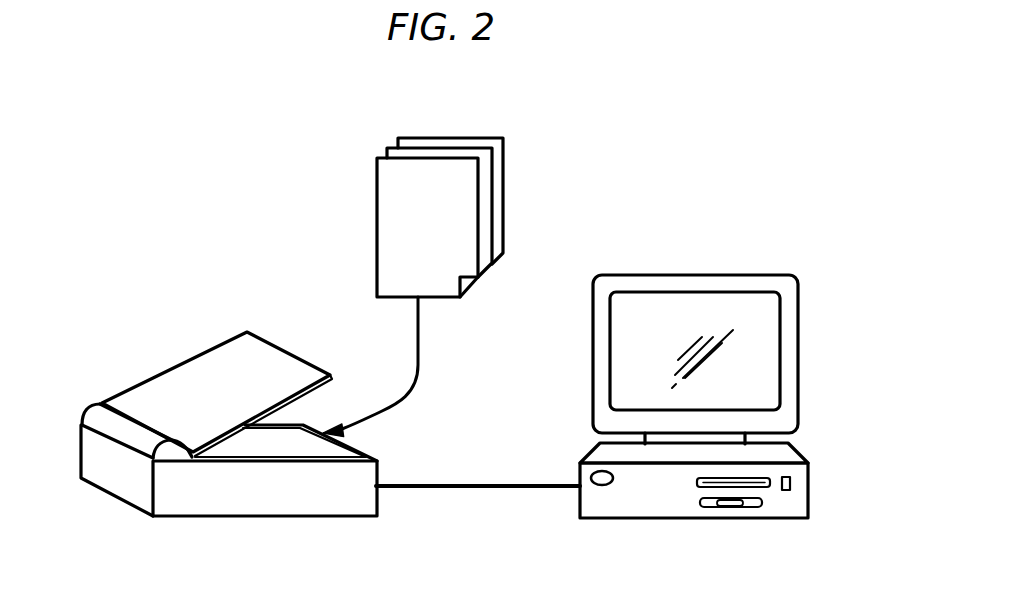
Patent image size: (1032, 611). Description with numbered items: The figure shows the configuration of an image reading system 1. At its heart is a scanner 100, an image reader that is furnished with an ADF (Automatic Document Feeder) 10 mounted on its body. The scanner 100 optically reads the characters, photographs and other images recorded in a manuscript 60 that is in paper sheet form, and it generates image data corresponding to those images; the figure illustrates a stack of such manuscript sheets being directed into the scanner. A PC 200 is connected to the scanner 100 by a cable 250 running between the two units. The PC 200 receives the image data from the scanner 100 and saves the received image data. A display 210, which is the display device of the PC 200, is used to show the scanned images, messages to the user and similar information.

The image reading system 1 is at (736, 113).
The ADF (Automatic Document Feeder) 10 is at (101, 404).
The manuscript 60 is at (421, 168).
The scanner 100 is at (253, 517).
The PC 200 is at (787, 509).
The display 210 is at (761, 337).
The cable 250 is at (497, 488).